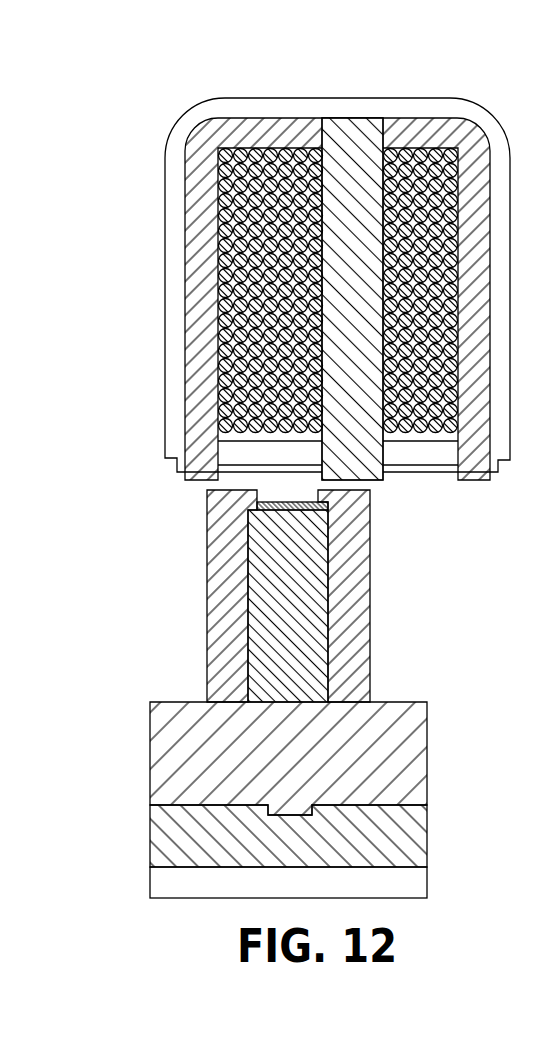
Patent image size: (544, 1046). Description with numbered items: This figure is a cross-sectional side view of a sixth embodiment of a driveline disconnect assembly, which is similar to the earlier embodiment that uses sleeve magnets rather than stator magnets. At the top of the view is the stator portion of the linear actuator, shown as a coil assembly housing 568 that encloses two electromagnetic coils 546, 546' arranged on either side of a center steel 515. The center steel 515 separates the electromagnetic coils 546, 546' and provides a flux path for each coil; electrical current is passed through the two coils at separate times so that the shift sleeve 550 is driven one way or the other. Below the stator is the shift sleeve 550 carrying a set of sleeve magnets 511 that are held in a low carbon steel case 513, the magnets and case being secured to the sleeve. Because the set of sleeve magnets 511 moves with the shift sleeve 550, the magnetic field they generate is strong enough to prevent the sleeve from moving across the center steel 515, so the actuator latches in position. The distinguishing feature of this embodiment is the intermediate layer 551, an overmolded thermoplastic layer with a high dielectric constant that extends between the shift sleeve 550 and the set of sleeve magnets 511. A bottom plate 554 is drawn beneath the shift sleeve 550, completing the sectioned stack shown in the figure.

The coil assembly housing 568 is at (184, 295).
The center steel 515 is at (350, 118).
The electromagnetic coil 546 is at (271, 237).
The electromagnetic coil 546' is at (426, 237).
The set of sleeve magnets 511 is at (243, 610).
The steel case 513 is at (371, 578).
The intermediate layer 551 is at (150, 775).
The shift sleeve 550 is at (428, 838).
The bottom plate 554 is at (428, 883).